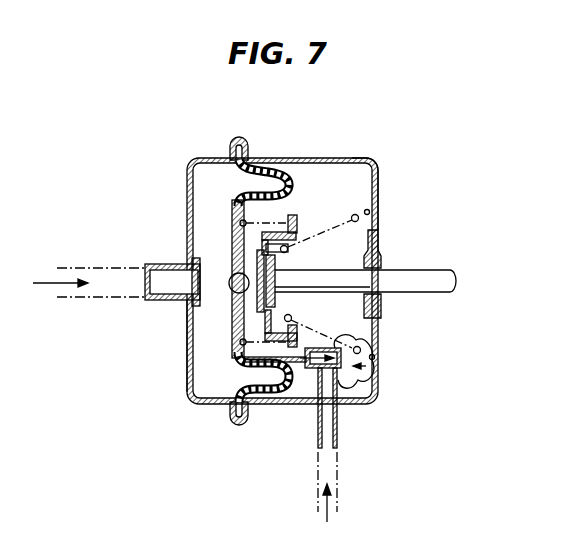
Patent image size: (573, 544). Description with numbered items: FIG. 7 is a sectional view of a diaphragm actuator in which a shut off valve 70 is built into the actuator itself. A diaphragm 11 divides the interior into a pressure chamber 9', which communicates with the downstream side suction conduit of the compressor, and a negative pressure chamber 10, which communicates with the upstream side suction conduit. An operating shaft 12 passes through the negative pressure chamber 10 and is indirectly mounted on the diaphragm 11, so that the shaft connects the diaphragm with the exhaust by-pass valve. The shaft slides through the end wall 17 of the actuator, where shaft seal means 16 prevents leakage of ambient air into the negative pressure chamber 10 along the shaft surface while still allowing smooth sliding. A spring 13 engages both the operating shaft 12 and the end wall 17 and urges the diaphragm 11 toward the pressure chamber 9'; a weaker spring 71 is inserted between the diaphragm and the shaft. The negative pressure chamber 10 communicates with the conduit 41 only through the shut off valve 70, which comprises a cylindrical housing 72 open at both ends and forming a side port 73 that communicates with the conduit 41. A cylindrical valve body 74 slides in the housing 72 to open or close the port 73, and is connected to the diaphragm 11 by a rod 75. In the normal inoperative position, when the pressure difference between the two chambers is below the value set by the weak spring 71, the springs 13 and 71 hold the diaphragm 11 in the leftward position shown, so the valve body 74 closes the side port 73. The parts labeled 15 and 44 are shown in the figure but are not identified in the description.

The negative pressure chamber 10 is at (368, 383).
The pressure chamber 9' is at (166, 346).
The diaphragm 11 is at (278, 230).
The operating shaft 12 is at (430, 274).
The spring 13 is at (369, 162).
The outlet tube 15 is at (350, 404).
The shaft seal means 16 is at (383, 265).
The end wall 17 is at (378, 172).
The conduit 41 is at (338, 490).
The inlet pipe 44 is at (115, 268).
The shut off valve 70 is at (376, 358).
The weak spring 71 is at (335, 217).
The cylindrical housing 72 is at (287, 407).
The side port 73 is at (307, 405).
The cylindrical valve body 74 is at (375, 338).
The rod 75 is at (274, 407).